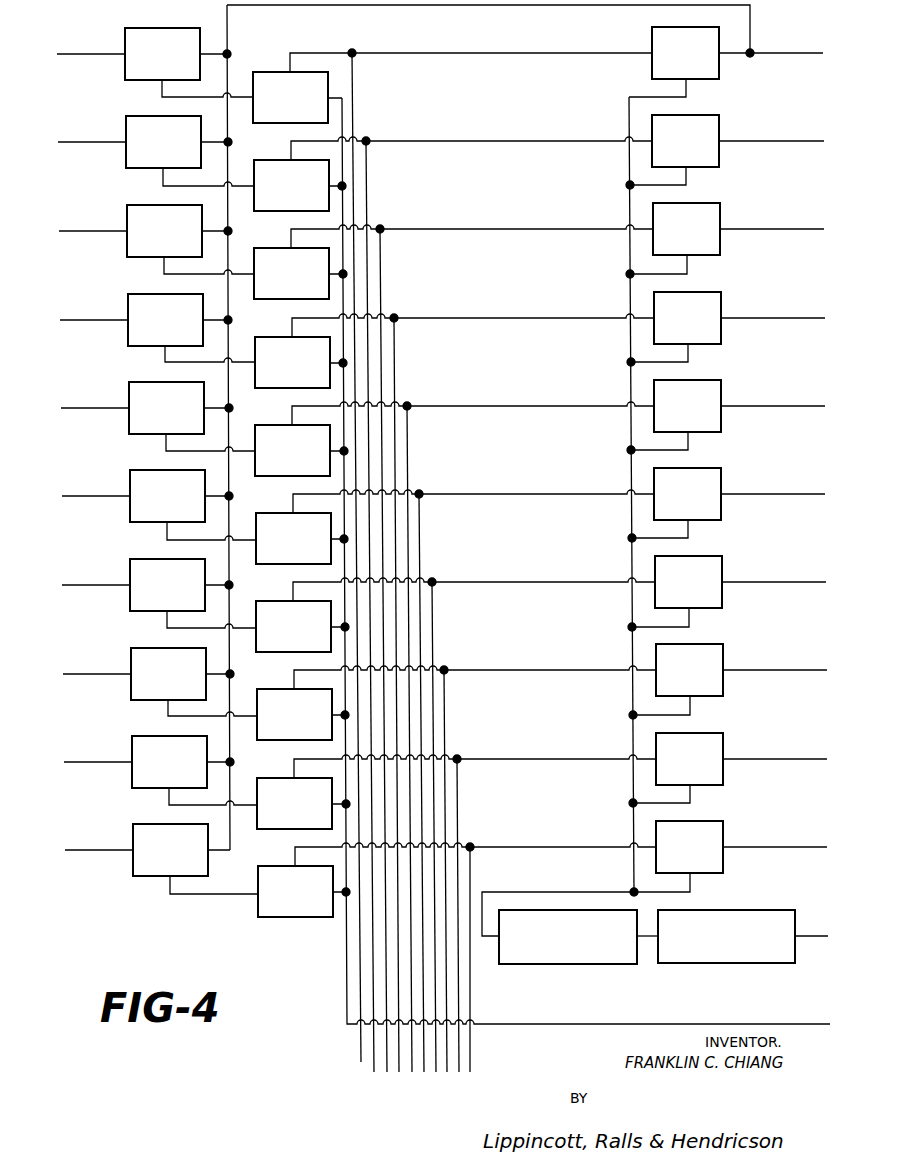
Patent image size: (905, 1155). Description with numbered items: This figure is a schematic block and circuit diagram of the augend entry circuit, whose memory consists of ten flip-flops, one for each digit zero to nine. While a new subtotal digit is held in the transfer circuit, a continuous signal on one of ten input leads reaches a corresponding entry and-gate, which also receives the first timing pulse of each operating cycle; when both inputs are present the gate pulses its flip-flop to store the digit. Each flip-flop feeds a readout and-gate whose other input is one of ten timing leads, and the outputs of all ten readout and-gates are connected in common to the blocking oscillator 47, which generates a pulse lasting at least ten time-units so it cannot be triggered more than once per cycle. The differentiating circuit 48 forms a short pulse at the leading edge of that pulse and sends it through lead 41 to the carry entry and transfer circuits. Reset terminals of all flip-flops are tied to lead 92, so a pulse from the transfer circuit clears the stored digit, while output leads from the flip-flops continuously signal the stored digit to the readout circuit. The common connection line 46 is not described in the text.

The common line 46 is at (631, 340).
The lead 92 is at (630, 1003).
The blocking oscillator 47 is at (565, 964).
The differentiating circuit 48 is at (700, 963).
The lead 41 is at (809, 932).